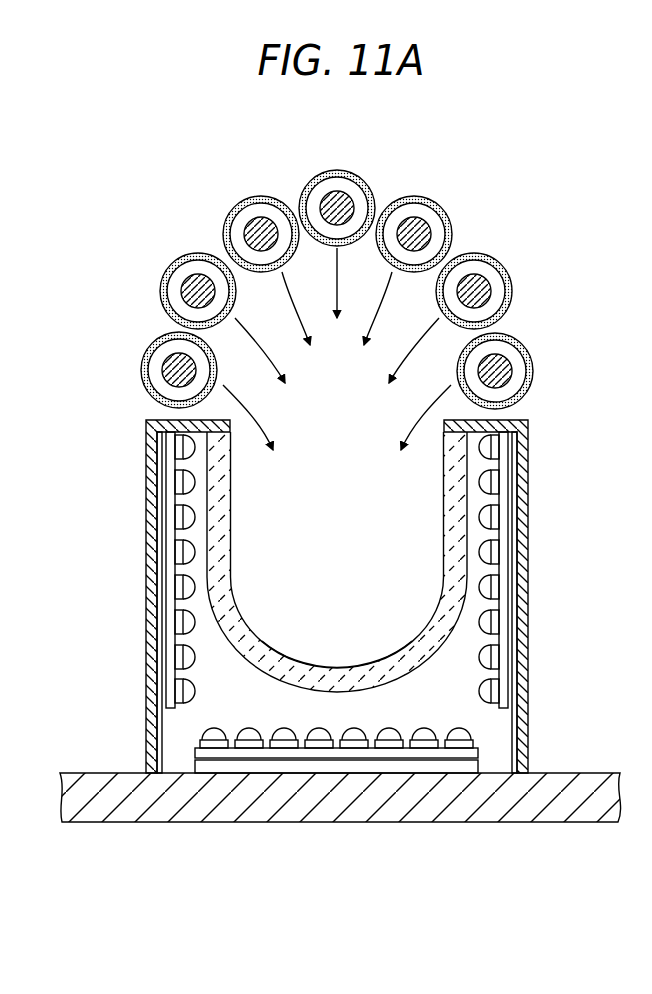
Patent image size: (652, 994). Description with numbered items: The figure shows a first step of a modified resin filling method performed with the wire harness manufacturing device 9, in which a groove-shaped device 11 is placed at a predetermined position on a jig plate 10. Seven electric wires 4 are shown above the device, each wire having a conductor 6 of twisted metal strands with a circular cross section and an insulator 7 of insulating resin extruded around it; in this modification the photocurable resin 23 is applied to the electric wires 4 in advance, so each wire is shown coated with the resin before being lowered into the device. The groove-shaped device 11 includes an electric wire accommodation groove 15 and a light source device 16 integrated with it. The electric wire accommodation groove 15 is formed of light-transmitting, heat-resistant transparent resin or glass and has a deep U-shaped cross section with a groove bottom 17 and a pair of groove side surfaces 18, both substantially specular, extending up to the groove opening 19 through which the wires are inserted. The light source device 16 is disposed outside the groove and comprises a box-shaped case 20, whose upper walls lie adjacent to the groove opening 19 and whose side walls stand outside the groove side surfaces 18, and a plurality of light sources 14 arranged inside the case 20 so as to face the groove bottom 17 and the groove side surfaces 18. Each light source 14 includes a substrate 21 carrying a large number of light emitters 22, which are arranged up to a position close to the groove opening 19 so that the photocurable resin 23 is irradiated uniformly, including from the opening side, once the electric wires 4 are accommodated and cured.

The electric wire 4 is at (353, 262).
The conductor 6 is at (412, 202).
The insulator 7 is at (432, 222).
The wire harness manufacturing device 9 is at (100, 365).
The jig plate 10 is at (80, 773).
The groove-shaped device 11 is at (130, 427).
The light source 14 is at (510, 492).
The electric wire accommodation groove 15 is at (380, 540).
The light source device 16 is at (88, 840).
The groove bottom 17 is at (340, 668).
The groove side surface 18 is at (230, 490).
The groove opening 19 is at (332, 453).
The case 20 is at (515, 420).
The substrate 21 is at (505, 568).
The light emitter 22 is at (483, 620).
The photocurable resin 23 is at (152, 343).